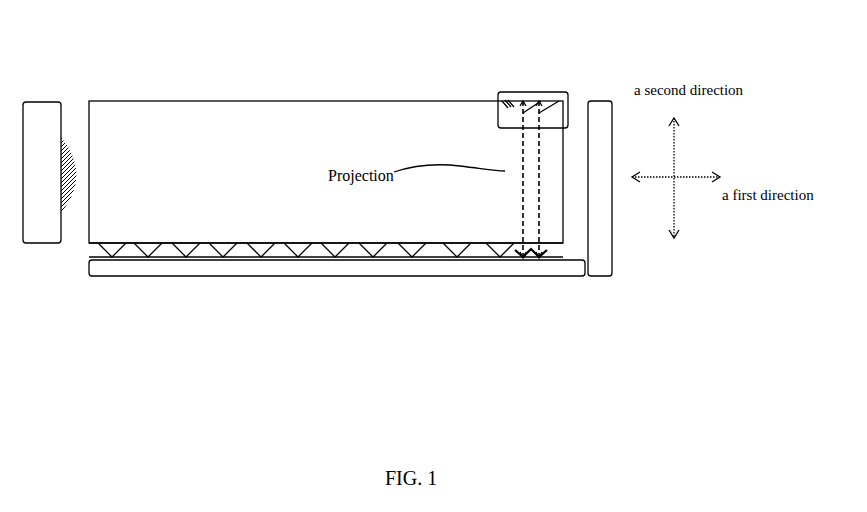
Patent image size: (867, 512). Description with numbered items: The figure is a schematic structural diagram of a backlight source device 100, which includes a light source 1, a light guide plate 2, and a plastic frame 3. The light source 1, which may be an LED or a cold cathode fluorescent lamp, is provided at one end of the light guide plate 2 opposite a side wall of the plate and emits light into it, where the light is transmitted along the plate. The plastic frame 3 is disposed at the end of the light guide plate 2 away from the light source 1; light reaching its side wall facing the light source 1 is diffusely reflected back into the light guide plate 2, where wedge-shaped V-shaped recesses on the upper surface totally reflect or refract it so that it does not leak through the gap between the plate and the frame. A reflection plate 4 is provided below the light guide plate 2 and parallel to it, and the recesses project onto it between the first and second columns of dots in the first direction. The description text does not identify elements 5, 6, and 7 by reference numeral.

The backlight source device 100 is at (40, 30).
The light source 1 is at (40, 122).
The light guide plate 2 is at (230, 130).
The plastic frame 3 is at (315, 262).
The reflection plate 4 is at (512, 92).
The side reflector 5 is at (600, 100).
The reflective sheet 6 is at (400, 257).
The projection region 7 is at (540, 260).